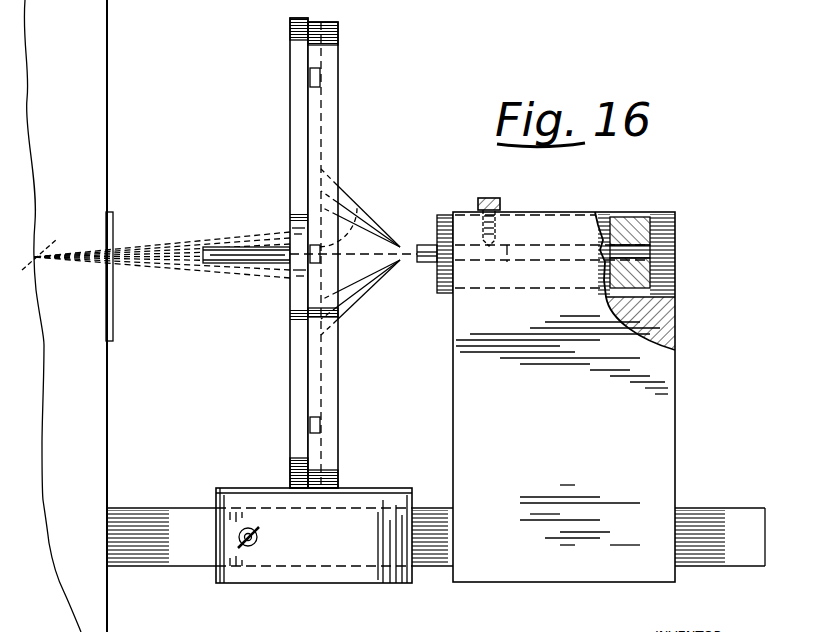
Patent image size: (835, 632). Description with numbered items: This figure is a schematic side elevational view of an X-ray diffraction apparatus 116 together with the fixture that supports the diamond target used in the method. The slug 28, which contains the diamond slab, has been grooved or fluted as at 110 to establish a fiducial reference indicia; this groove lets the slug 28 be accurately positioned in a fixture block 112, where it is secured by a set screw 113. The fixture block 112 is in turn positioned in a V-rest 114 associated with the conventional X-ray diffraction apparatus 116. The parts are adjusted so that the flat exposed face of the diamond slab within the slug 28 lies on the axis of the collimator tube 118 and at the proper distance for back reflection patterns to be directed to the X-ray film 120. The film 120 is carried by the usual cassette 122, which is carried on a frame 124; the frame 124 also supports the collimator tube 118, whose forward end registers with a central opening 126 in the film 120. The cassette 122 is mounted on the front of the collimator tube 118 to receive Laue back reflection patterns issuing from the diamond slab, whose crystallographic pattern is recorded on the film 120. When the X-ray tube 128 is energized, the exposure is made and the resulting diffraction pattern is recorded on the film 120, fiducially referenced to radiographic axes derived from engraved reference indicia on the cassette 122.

The X-ray diffraction apparatus 116 is at (206, 101).
The collimator tube 118 is at (212, 250).
The X-ray film 120 is at (328, 153).
The cassette 122 is at (330, 38).
The frame 124 is at (288, 404).
The central opening 126 is at (352, 216).
The X-ray tube 128 is at (114, 297).
The slug 28 is at (424, 263).
The groove 110 is at (502, 245).
The fixture block 112 is at (440, 220).
The set screw 113 is at (482, 200).
The V-rest 114 is at (670, 428).